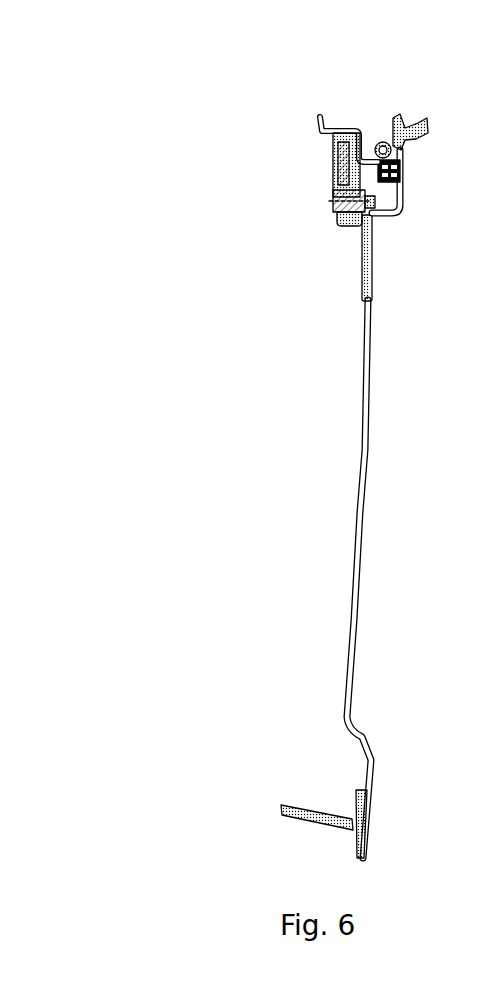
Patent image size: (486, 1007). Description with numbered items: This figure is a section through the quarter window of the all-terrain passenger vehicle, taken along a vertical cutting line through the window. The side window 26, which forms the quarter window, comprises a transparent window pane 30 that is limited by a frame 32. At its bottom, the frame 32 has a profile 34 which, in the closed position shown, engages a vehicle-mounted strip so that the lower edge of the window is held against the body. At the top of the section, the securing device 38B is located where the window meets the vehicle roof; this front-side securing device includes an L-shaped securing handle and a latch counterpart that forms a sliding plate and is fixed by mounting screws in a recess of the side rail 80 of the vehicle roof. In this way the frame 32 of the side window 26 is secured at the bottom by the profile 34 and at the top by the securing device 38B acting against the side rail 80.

The side window 26 is at (357, 512).
The window pane 30 is at (372, 418).
The frame 32 is at (387, 220).
The profile 34 is at (282, 807).
The securing device 38B is at (335, 193).
The side rail 80 is at (335, 128).